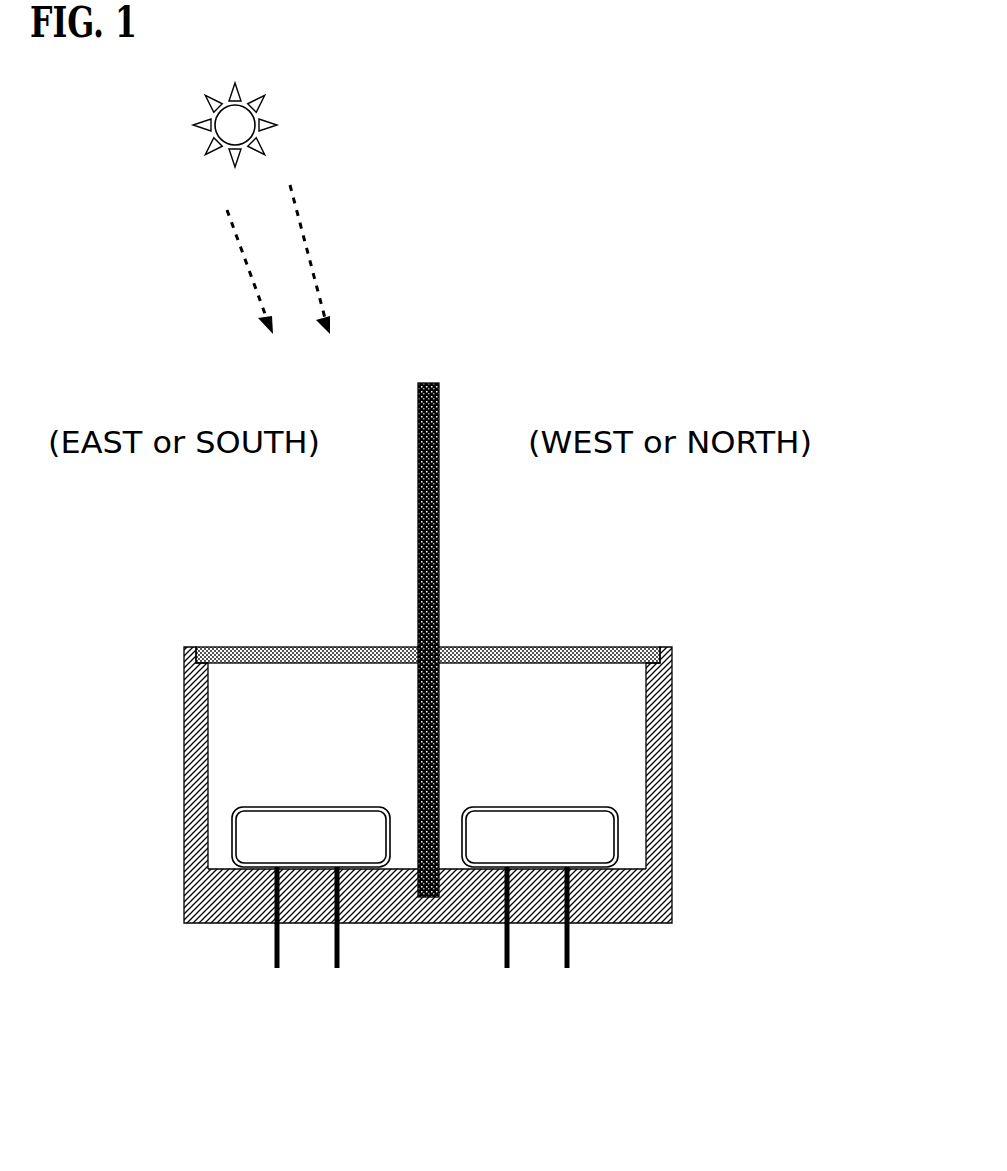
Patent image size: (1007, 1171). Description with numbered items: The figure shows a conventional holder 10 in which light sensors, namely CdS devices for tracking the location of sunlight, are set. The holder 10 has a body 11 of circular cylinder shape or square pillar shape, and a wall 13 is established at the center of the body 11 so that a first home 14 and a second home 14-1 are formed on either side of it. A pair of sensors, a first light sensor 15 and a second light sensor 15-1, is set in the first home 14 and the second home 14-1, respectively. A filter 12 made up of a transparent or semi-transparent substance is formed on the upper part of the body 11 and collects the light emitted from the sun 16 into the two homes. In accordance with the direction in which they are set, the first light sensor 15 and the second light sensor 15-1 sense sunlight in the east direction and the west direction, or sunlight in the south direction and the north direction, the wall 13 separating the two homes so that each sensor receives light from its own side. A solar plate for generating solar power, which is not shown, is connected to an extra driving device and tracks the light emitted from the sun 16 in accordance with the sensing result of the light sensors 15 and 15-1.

The holder 10 is at (442, 724).
The body 11 is at (672, 888).
The filter 12 is at (290, 655).
The wall 13 is at (440, 552).
The first home 14 is at (240, 745).
The second home 14-1 is at (617, 772).
The first light sensor 15 is at (305, 827).
The second light sensor 15-1 is at (535, 827).
The sun 16 is at (268, 110).